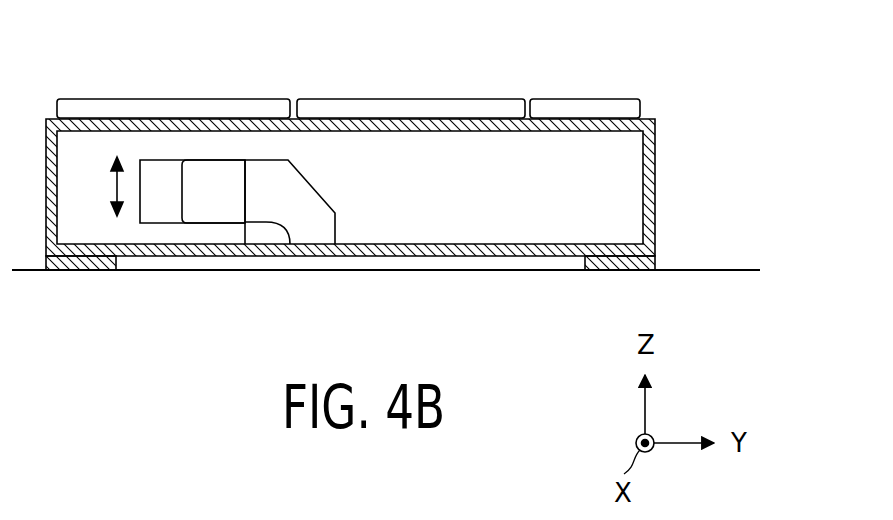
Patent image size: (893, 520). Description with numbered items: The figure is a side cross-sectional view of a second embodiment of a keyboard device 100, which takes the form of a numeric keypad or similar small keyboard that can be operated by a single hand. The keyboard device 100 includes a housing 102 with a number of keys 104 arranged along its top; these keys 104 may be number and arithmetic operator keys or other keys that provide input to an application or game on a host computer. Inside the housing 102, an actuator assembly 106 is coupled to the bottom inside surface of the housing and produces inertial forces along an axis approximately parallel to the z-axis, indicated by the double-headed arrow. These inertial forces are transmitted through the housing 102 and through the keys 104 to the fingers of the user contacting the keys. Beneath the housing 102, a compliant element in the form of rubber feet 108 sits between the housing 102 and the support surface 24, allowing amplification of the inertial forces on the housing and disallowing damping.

The keyboard device 100 is at (241, 55).
The housing 102 is at (658, 150).
The keys 104 is at (562, 105).
The actuator assembly 106 is at (356, 181).
The rubber feet 108 is at (82, 272).
The support surface 24 is at (681, 264).